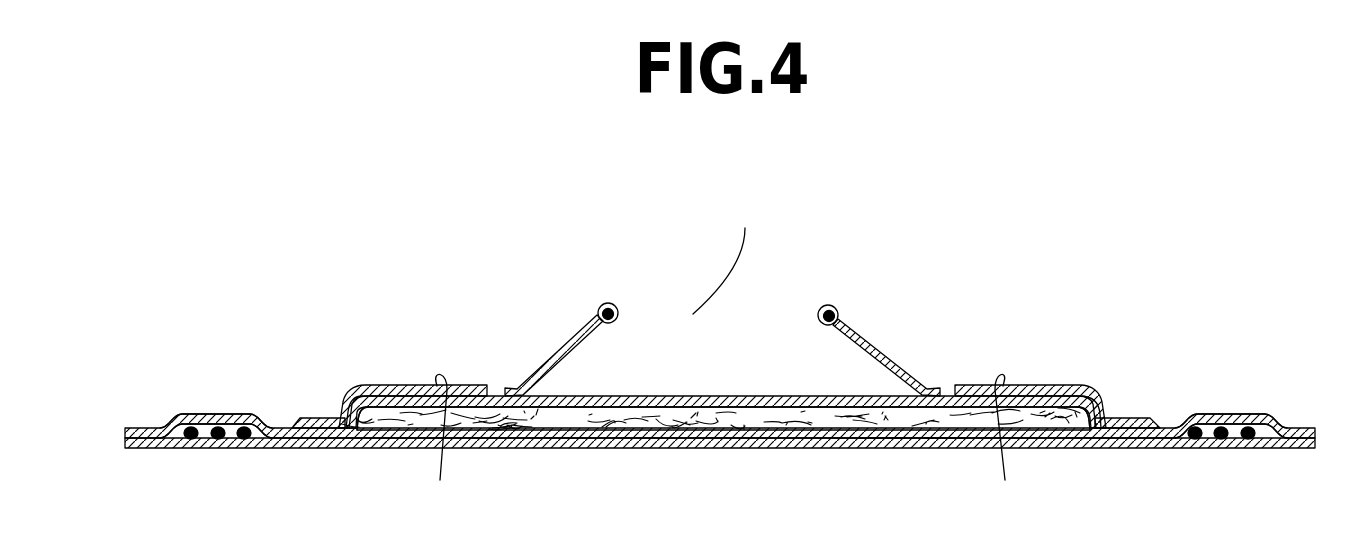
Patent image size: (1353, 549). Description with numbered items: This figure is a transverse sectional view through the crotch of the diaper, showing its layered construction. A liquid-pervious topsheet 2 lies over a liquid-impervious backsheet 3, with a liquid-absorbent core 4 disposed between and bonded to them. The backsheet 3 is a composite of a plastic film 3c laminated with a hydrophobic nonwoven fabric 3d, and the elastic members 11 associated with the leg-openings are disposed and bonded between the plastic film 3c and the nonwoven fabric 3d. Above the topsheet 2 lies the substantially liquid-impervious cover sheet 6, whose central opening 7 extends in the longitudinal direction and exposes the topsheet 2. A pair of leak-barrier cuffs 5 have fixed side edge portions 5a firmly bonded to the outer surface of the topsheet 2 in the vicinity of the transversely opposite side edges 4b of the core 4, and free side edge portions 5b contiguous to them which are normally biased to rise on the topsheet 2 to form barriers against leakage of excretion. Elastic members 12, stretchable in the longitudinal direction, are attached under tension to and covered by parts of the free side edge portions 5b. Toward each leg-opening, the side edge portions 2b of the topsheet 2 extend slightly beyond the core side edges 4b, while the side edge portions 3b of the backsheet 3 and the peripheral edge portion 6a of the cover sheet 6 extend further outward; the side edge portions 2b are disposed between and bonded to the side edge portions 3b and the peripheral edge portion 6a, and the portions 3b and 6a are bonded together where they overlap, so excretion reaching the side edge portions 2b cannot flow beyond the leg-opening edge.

The topsheet 2 is at (737, 396).
The side edge portions of the topsheet 2b is at (232, 416).
The backsheet 3 is at (798, 446).
The side edge portions of the backsheet 3b is at (163, 437).
The plastic film 3c is at (873, 440).
The hydrophobic nonwoven fabric 3d is at (943, 435).
The liquid-absorbent core 4 is at (695, 418).
The side edges of the core 4b is at (357, 414).
The leak-barrier cuffs 5 is at (566, 348).
The fixed side edge portions 5a is at (718, 438).
The free side edge portions 5b is at (601, 303).
The cover sheet 6 is at (412, 385).
The peripheral edge portion of the cover sheet 6a is at (192, 418).
The central opening 7 is at (722, 255).
The elastic members associated with the leg-openings 11 is at (243, 442).
The elastic members 12 is at (617, 306).